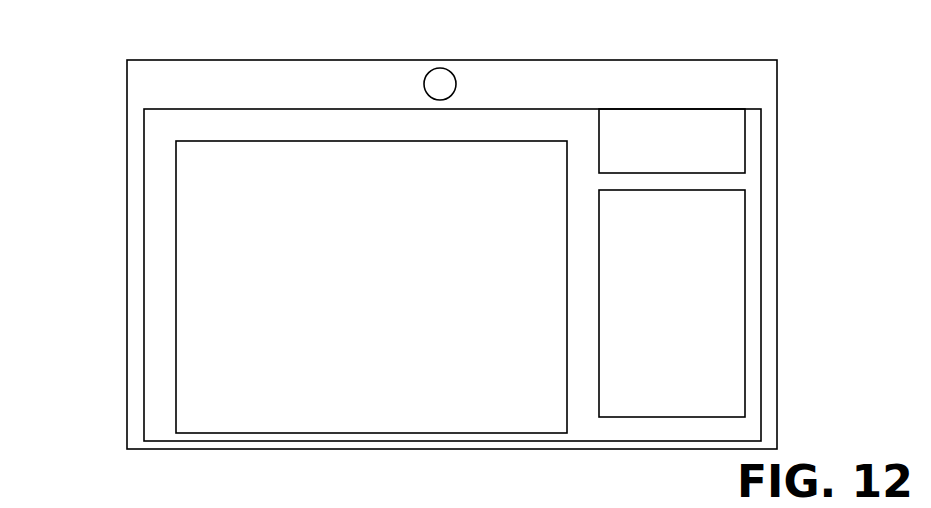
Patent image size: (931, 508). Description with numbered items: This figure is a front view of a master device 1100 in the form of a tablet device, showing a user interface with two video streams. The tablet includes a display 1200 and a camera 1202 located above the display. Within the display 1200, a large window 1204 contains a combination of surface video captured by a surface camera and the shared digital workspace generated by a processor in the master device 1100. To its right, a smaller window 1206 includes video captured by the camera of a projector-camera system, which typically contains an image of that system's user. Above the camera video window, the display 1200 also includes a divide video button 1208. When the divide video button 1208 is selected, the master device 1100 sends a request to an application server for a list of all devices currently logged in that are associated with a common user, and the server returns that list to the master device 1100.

The master device 1100 is at (127, 221).
The display 1200 is at (150, 148).
The camera 1202 is at (449, 71).
The window 1204 is at (176, 390).
The window 1206 is at (745, 282).
The divide video button 1208 is at (745, 155).